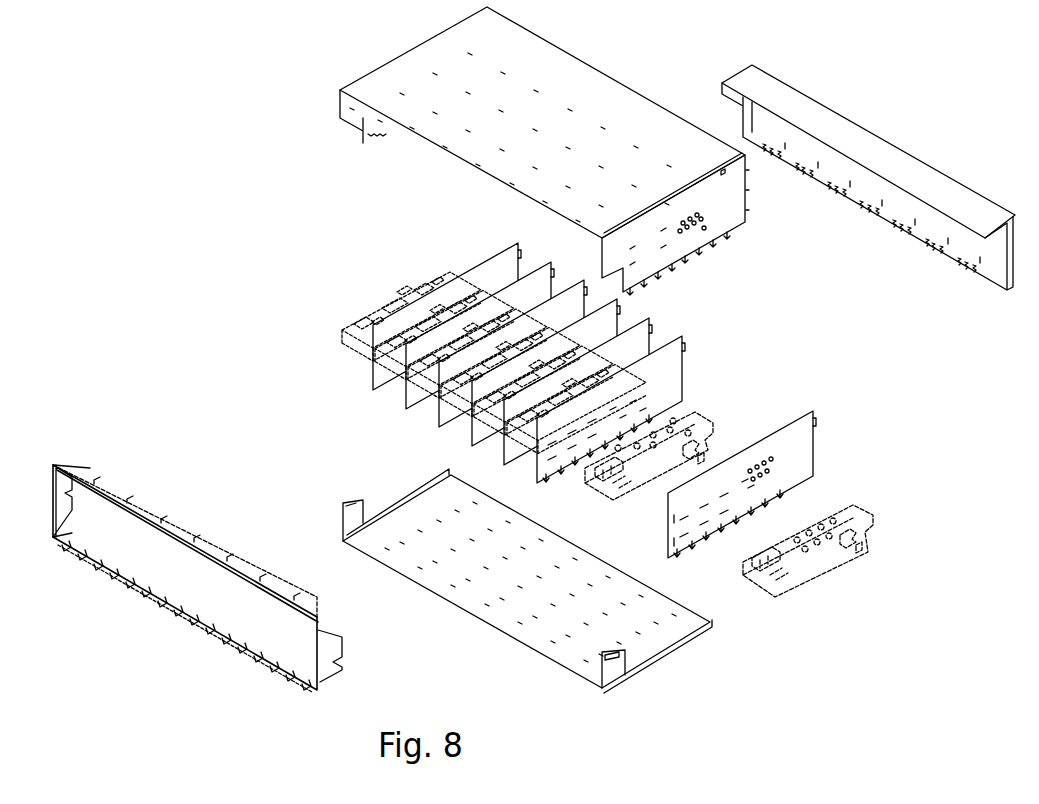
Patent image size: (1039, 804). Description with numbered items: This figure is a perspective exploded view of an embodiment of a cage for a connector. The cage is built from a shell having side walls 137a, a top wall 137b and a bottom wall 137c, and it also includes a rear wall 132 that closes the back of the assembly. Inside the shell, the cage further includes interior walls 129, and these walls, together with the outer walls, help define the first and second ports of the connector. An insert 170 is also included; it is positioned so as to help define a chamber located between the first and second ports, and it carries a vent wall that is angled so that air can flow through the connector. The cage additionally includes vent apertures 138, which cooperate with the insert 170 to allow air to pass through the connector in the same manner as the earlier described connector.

The rear wall 132 is at (917, 162).
The side wall 137a is at (747, 203).
The top wall 137b is at (432, 142).
The bottom wall 137c is at (667, 650).
The interior wall 129 is at (744, 448).
The vent aperture 138 is at (784, 455).
The insert 170 is at (815, 565).